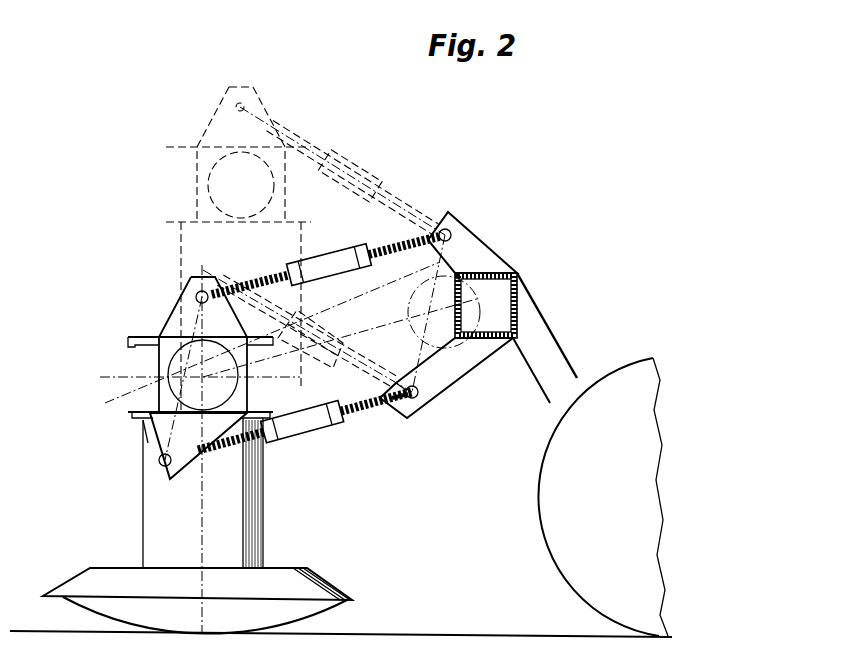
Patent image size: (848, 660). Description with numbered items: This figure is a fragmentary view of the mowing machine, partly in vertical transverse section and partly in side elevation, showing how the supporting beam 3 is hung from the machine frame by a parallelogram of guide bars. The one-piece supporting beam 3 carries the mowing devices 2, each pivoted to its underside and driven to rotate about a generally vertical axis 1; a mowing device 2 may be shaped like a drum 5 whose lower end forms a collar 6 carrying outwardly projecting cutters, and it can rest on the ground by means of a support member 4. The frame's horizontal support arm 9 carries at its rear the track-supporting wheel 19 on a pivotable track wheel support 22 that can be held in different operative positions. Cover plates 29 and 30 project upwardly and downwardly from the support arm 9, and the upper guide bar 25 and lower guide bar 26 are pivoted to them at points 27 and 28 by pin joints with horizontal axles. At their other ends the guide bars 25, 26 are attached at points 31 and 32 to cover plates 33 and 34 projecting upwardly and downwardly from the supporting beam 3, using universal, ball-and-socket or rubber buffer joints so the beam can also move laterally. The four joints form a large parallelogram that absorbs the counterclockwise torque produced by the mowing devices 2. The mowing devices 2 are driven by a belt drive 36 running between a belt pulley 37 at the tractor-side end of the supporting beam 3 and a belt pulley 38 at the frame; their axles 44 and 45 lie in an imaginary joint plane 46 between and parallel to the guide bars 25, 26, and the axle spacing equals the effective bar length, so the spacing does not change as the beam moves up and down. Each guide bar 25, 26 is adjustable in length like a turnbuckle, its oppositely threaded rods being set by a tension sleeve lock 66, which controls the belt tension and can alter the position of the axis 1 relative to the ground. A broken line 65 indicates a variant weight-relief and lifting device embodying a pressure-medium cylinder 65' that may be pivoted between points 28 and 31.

The vertical axis 1 is at (202, 557).
The mowing device 2 is at (267, 519).
The supporting beam 3 is at (167, 363).
The support member 4 is at (297, 610).
The drum 5 is at (253, 478).
The collar 6 is at (323, 592).
The support arm 9 is at (518, 280).
The track-supporting wheel 19 is at (556, 582).
The track wheel support 22 is at (562, 375).
The upper guide bar 25 is at (393, 237).
The lower guide bar 26 is at (393, 402).
The pivot point 27 is at (447, 228).
The pivot point 28 is at (418, 398).
The cover plate 29 is at (478, 252).
The cover plate 30 is at (477, 357).
The attachment point 31 is at (195, 296).
The attachment point 32 is at (158, 462).
The cover plate 33 is at (170, 327).
The cover plate 34 is at (162, 442).
The belt drive 36 is at (348, 422).
The belt pulley 37 is at (187, 368).
The belt pulley 38 is at (480, 323).
The pulley axle 44 is at (160, 411).
The pulley axle 45 is at (457, 285).
The imaginary joint plane 46 is at (396, 325).
The broken line 65 is at (428, 370).
The pressure-medium cylinder 65' is at (327, 333).
The tension sleeve lock 66 is at (332, 250).